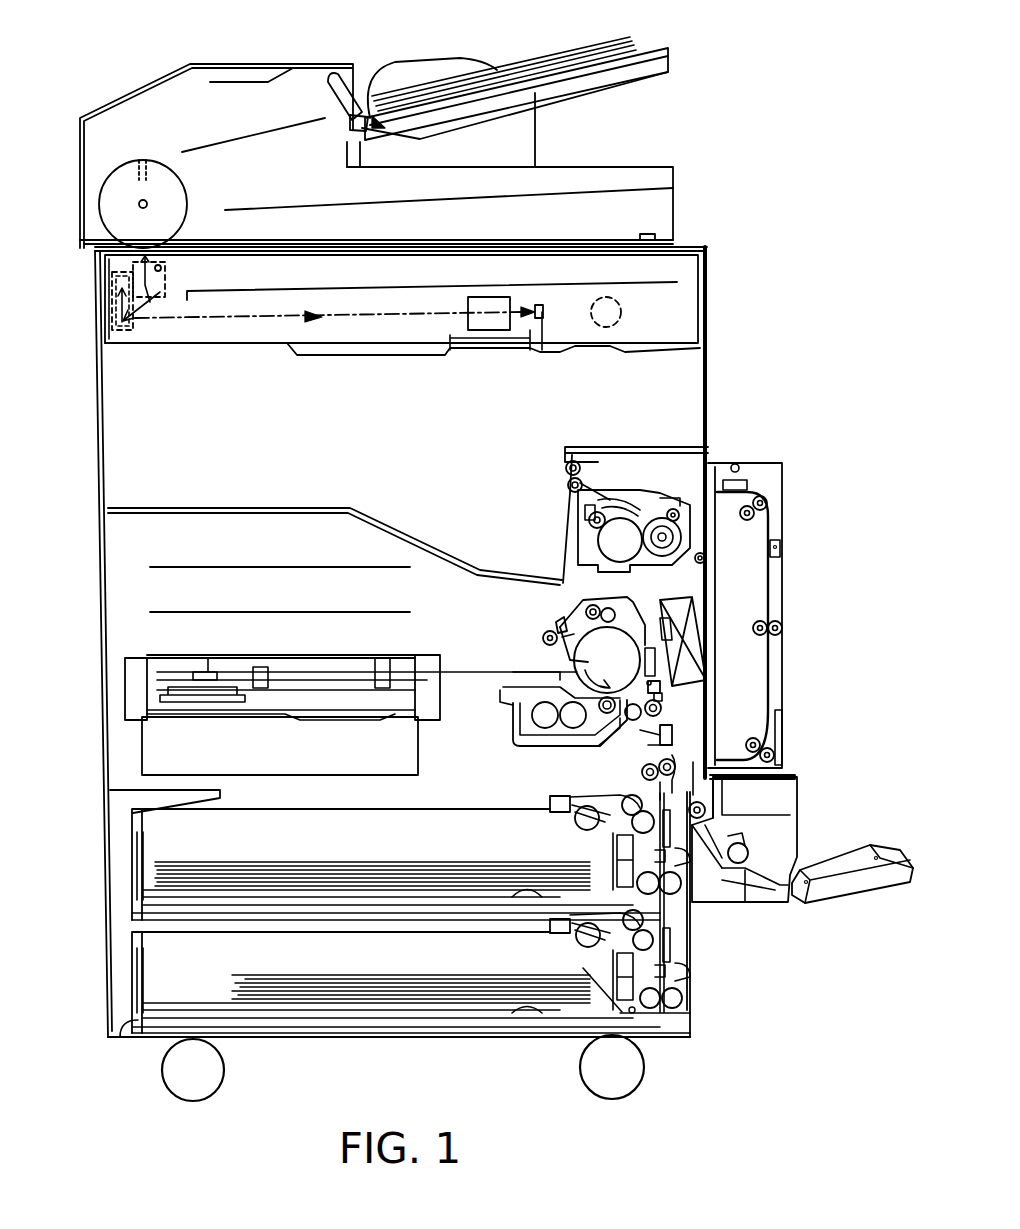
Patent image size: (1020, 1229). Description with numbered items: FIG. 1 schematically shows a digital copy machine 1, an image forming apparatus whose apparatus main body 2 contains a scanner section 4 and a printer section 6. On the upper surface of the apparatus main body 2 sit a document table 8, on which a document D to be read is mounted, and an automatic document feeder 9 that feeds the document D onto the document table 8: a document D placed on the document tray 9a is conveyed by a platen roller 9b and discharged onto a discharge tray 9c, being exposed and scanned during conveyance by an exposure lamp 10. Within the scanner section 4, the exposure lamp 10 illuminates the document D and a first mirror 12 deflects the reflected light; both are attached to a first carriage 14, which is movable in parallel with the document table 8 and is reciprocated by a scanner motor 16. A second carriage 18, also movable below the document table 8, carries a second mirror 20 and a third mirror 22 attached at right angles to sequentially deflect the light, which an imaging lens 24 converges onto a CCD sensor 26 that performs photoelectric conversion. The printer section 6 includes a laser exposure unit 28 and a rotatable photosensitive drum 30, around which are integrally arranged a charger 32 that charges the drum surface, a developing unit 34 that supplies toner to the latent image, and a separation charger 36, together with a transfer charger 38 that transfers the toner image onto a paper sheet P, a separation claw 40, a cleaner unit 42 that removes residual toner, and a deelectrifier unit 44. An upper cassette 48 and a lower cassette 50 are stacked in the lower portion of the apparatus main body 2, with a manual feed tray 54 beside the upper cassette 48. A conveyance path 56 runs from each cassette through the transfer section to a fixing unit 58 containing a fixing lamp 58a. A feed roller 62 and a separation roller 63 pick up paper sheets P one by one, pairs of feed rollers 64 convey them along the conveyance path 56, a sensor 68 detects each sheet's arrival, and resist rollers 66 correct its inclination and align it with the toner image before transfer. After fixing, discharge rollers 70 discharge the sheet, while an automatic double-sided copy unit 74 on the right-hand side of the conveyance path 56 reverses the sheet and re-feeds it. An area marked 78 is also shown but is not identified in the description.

The digital copy machine 1 is at (785, 239).
The apparatus main body 2 is at (708, 368).
The scanner section 4 is at (692, 307).
The printer section 6 is at (803, 802).
The document table 8 is at (622, 232).
The automatic document feeder 9 is at (238, 80).
The document tray 9a is at (633, 73).
The platen roller 9b is at (96, 207).
The discharge tray 9c is at (604, 166).
The exposure lamp 10 is at (163, 270).
The first mirror 12 is at (150, 297).
The first carriage 14 is at (168, 288).
The scanner motor 16 is at (622, 308).
The second carriage 18 is at (108, 318).
The second mirror 20 is at (122, 290).
The third mirror 22 is at (122, 318).
The imaging lens 24 is at (489, 331).
The CCD sensor 26 is at (548, 310).
The laser exposure unit 28 is at (210, 670).
The photosensitive drum 30 is at (612, 630).
The charger 32 is at (570, 655).
The developing unit 34 is at (570, 716).
The separation charger 36 is at (655, 690).
The transfer charger 38 is at (700, 668).
The separation claw 40 is at (682, 606).
The cleaner unit 42 is at (582, 613).
The deelectrifier unit 44 is at (552, 626).
The upper cassette 48 is at (128, 863).
The lower cassette 50 is at (128, 976).
The manual feed tray 54 is at (842, 893).
The conveyance path 56 is at (680, 647).
The fixing unit 58 is at (618, 500).
The fixing lamp 58a is at (666, 525).
The feed roller 62 is at (578, 822).
The separation roller 63 is at (638, 872).
The feed rollers 64 is at (645, 771).
The resist rollers 66 is at (613, 743).
The sensor 68 is at (680, 737).
The discharge rollers 70 is at (565, 466).
The automatic double-sided copy unit 74 is at (800, 457).
The internal space 78 is at (333, 427).
The document D is at (547, 52).
The copy paper sheet P is at (598, 500).